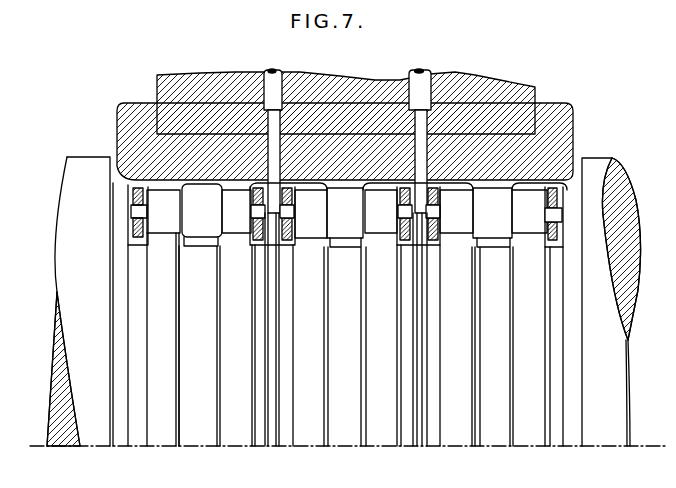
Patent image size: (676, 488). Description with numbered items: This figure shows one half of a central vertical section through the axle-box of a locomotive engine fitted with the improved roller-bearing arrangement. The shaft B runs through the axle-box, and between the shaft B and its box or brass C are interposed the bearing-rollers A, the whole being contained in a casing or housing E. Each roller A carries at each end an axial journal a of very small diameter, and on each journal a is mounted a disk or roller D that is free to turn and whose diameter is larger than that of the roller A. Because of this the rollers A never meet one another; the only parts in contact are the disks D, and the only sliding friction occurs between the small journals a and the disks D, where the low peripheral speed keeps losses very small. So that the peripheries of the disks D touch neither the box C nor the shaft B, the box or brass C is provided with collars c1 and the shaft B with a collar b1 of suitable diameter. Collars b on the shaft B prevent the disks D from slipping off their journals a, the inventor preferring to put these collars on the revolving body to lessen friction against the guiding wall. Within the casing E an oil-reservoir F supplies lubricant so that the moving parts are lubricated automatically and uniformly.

The oil-reservoir F is at (421, 70).
The casing or housing E is at (513, 62).
The box or brass C is at (578, 128).
The disk or roller D is at (288, 214).
The collar c1 is at (207, 185).
The axial journal a is at (289, 212).
The roller A is at (345, 317).
The collar b is at (419, 326).
The collar b1 is at (548, 318).
The shaft B is at (611, 302).